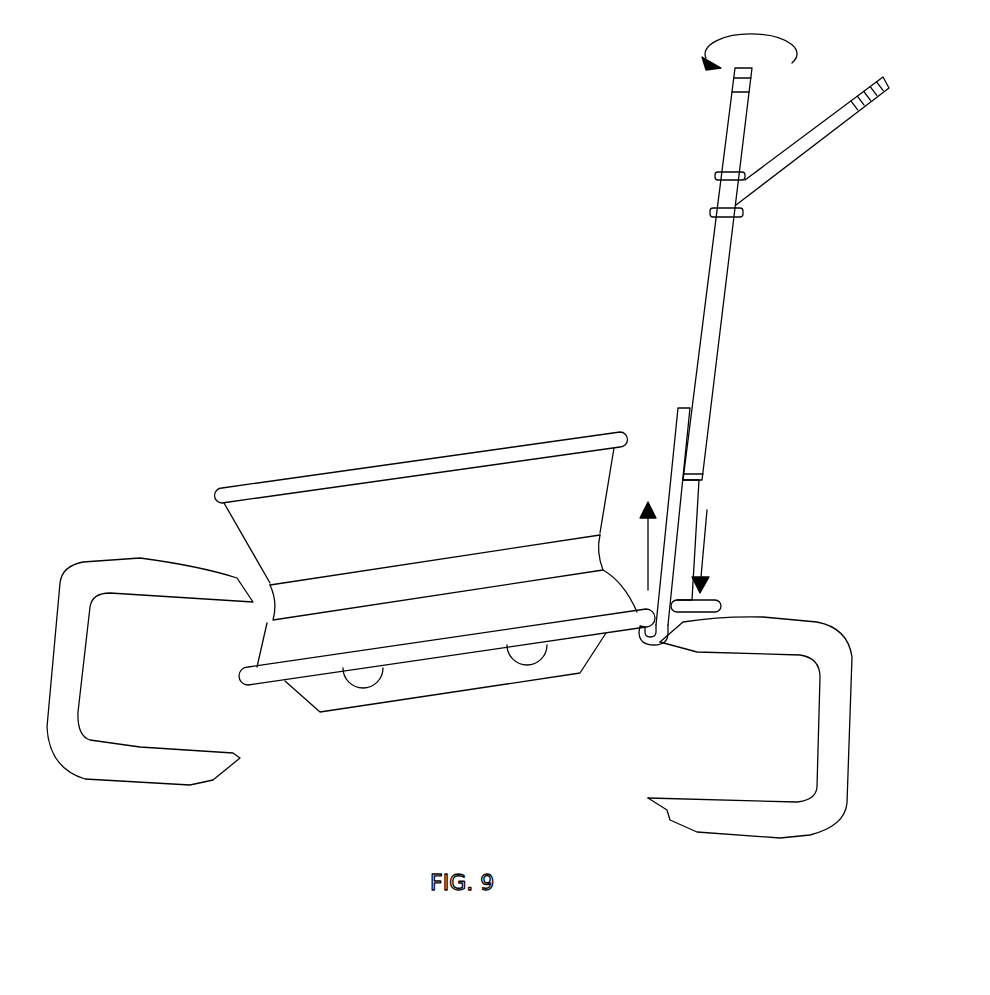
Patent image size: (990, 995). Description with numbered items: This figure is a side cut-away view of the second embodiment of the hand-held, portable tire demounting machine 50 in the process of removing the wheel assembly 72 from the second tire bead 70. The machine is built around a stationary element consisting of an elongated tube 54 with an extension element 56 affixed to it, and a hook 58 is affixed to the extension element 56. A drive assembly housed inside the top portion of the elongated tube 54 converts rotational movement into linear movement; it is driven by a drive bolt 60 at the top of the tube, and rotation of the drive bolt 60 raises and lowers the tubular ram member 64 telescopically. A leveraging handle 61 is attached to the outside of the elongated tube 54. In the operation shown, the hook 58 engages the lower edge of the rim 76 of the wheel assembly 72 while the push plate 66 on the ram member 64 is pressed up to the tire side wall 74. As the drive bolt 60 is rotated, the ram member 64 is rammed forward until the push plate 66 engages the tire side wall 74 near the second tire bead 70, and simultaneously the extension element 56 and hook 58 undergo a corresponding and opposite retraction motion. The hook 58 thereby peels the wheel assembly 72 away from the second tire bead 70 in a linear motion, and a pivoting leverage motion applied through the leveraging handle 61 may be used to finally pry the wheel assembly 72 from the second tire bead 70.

The hand-held, portable tire demounting machine 50 is at (507, 436).
The elongated tube 54 is at (705, 298).
The extension element 56 is at (675, 442).
The hook 58 is at (640, 648).
The drive bolt 60 is at (735, 72).
The leveraging handle 61 is at (808, 152).
The ram member 64 is at (698, 506).
The push plate 66 is at (722, 600).
The second tire bead 70 is at (688, 638).
The wheel assembly 72 is at (340, 597).
The tire side wall 74 is at (777, 615).
The rim 76 is at (463, 655).